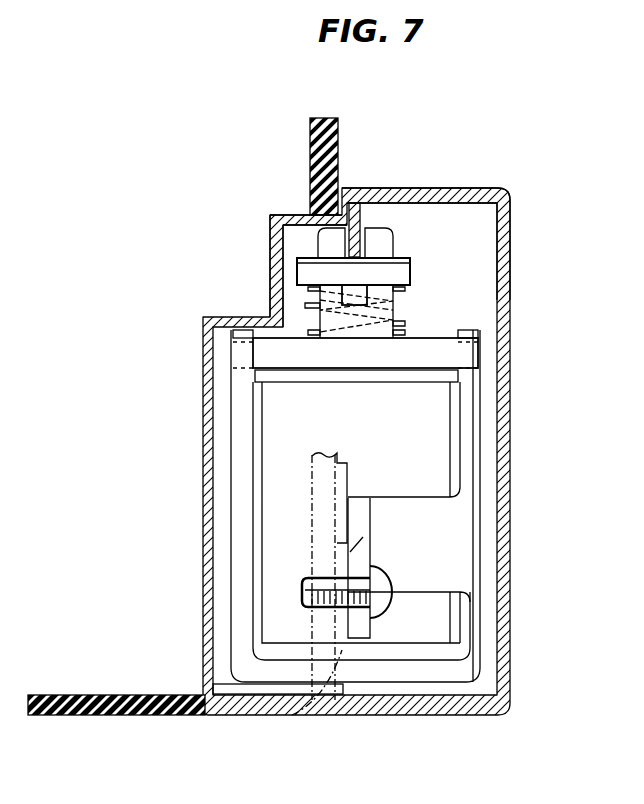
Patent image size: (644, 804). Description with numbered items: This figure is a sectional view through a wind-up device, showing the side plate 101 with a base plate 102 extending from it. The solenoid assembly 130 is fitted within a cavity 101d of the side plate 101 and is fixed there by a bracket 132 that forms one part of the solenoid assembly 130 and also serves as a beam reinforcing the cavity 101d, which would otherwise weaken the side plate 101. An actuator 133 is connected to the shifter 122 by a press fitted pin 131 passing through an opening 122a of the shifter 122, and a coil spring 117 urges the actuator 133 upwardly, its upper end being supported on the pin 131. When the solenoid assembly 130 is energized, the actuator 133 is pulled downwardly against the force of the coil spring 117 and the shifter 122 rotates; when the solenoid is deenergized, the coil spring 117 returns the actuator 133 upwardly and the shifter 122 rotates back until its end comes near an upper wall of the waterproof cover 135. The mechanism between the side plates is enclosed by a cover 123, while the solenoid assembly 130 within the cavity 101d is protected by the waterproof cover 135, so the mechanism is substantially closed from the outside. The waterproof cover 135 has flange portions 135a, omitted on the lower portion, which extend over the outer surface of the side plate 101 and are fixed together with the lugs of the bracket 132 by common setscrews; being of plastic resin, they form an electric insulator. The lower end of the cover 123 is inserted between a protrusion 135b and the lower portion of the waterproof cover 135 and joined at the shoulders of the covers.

The side plate 101 is at (346, 131).
The cavity 101d is at (318, 228).
The base plate 102 is at (160, 712).
The coil spring 117 is at (395, 318).
The shifter 122 is at (366, 218).
The opening 122a is at (362, 253).
The cover 123 is at (484, 188).
The solenoid assembly 130 is at (426, 423).
The pin 131 is at (308, 270).
The bracket 132 is at (457, 555).
The actuator 133 is at (387, 307).
The waterproof cover 135 is at (210, 318).
The flange portions 135a is at (343, 190).
The protrusion 135b is at (243, 694).